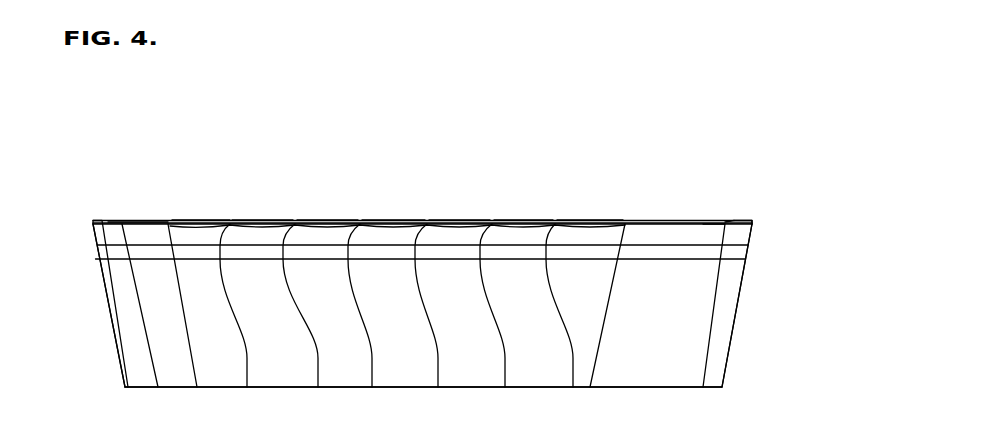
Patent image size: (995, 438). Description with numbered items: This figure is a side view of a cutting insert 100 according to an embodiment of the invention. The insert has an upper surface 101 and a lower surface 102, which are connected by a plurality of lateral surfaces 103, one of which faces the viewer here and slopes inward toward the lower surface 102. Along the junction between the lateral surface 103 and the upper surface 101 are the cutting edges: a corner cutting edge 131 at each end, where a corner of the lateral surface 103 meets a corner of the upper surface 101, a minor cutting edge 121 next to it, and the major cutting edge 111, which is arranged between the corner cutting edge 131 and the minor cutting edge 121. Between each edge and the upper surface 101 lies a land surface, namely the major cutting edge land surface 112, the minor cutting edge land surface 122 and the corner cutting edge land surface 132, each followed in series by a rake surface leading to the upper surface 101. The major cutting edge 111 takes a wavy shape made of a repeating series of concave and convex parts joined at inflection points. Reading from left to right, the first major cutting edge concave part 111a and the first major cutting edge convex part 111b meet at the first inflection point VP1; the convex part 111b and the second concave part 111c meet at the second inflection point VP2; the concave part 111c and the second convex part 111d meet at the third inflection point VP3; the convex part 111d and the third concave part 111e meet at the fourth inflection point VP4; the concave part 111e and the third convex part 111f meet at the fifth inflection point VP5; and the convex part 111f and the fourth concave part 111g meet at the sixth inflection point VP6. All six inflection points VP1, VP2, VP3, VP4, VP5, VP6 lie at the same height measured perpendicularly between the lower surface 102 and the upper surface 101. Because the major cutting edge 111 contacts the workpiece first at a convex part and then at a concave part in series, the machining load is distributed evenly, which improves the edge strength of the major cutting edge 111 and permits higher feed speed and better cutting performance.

The capacitor component 100 is at (686, 102).
The upper surface 101 is at (202, 221).
The lower surface 102 is at (142, 388).
The lateral surface 103 is at (112, 323).
The major cutting edge 111 is at (592, 140).
The first major cutting edge concave part 111a is at (218, 221).
The first major cutting edge convex part 111b is at (277, 221).
The second major cutting edge concave part 111c is at (340, 221).
The second major cutting edge convex part 111d is at (390, 220).
The third major cutting edge concave part 111e is at (457, 220).
The third major cutting edge convex part 111f is at (530, 220).
The fourth major cutting edge concave part 111g is at (592, 220).
The major cutting edge land surface 112 is at (178, 221).
The minor cutting edge 121 is at (97, 221).
The minor cutting edge land surface 122 is at (108, 221).
The corner cutting edge 131 is at (138, 221).
The corner cutting edge land surface 132 is at (153, 221).
The first major cutting edge inflection point VP1 is at (247, 388).
The second major cutting edge inflection point VP2 is at (318, 388).
The third major cutting edge inflection point VP3 is at (372, 388).
The fourth major cutting edge inflection point VP4 is at (438, 388).
The fifth major cutting edge inflection point VP5 is at (505, 388).
The sixth major cutting edge inflection point VP6 is at (573, 388).